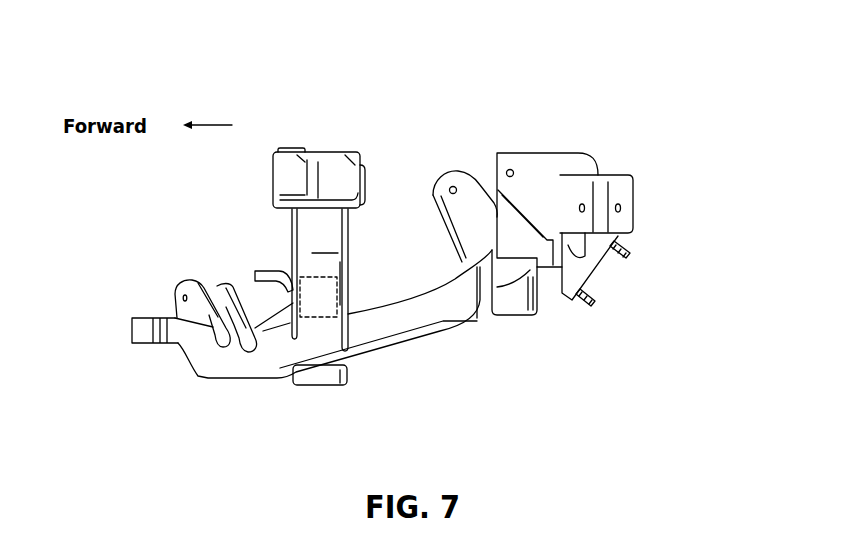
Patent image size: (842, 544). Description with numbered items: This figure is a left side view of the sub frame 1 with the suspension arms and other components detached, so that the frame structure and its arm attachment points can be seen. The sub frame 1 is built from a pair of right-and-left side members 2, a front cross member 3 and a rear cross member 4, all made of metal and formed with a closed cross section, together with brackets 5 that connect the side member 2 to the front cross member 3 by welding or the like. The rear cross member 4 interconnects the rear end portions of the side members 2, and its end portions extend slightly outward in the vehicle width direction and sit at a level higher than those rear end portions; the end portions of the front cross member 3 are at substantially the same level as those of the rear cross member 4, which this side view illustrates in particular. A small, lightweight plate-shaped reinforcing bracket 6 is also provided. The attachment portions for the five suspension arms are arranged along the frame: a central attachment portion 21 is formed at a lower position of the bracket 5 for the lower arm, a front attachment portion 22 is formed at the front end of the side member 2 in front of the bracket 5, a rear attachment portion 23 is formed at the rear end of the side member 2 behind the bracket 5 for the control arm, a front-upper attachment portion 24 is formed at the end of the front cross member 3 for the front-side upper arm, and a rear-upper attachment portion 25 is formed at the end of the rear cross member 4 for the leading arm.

The sub frame 1 is at (607, 59).
The side member 2 is at (397, 328).
The front cross member 3 is at (338, 152).
The front-upper attachment portion 24 is at (319, 178).
The rear cross member 4 is at (539, 155).
The bracket 5 is at (293, 245).
The plate-shaped reinforcing bracket 6 is at (273, 320).
The central attachment portion 21 is at (320, 305).
The front attachment portion 22 is at (183, 287).
The rear attachment portion 23 is at (512, 307).
The rear-upper attachment portion 25 is at (626, 187).